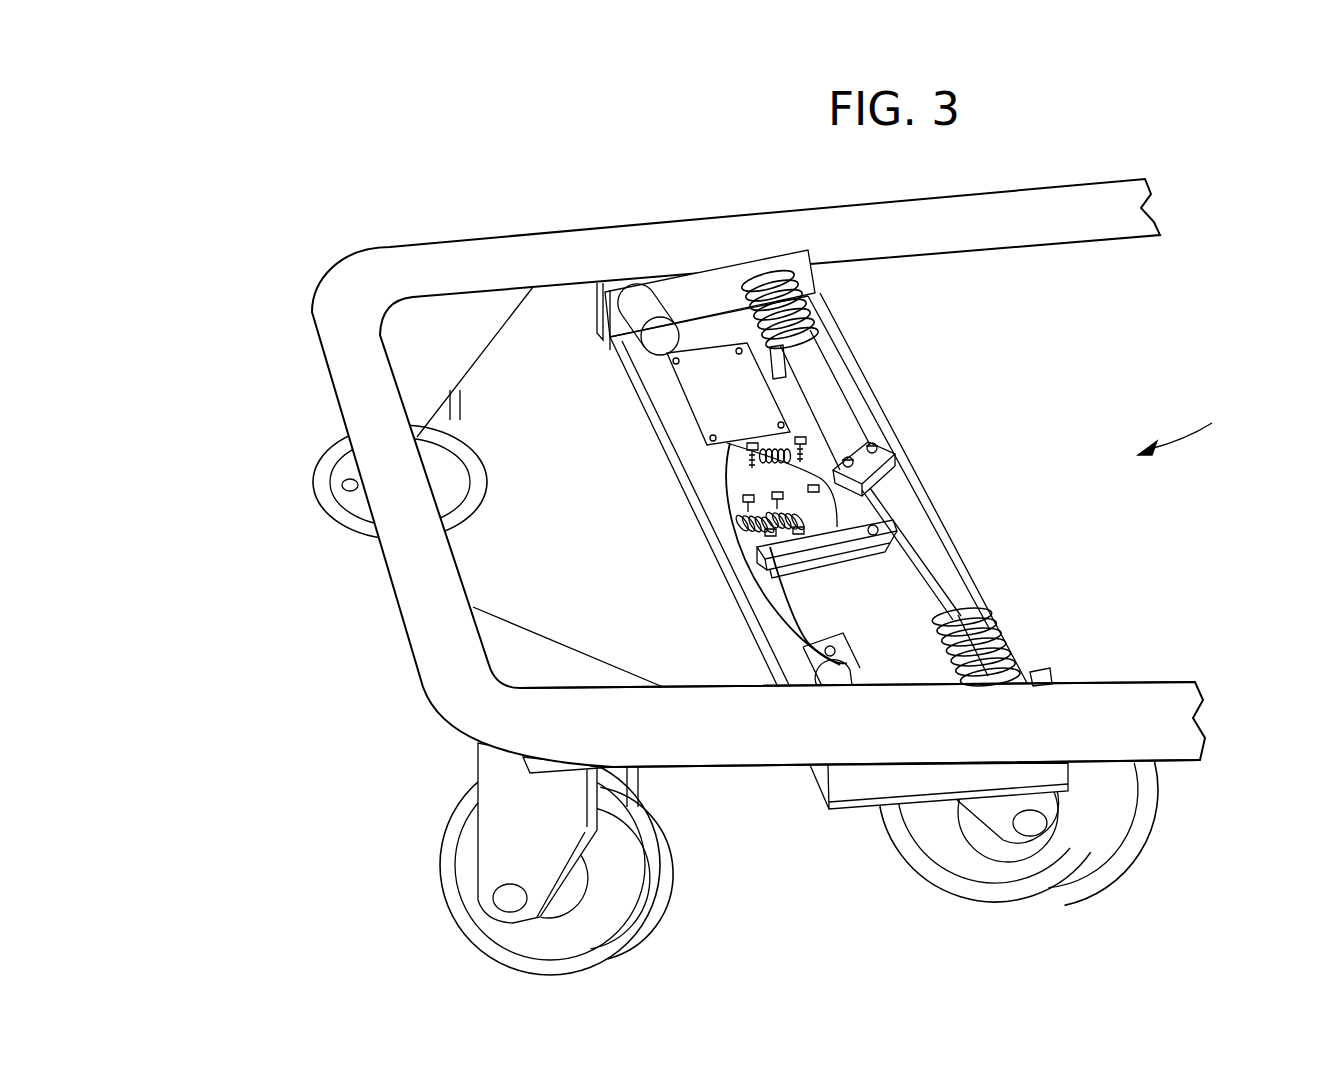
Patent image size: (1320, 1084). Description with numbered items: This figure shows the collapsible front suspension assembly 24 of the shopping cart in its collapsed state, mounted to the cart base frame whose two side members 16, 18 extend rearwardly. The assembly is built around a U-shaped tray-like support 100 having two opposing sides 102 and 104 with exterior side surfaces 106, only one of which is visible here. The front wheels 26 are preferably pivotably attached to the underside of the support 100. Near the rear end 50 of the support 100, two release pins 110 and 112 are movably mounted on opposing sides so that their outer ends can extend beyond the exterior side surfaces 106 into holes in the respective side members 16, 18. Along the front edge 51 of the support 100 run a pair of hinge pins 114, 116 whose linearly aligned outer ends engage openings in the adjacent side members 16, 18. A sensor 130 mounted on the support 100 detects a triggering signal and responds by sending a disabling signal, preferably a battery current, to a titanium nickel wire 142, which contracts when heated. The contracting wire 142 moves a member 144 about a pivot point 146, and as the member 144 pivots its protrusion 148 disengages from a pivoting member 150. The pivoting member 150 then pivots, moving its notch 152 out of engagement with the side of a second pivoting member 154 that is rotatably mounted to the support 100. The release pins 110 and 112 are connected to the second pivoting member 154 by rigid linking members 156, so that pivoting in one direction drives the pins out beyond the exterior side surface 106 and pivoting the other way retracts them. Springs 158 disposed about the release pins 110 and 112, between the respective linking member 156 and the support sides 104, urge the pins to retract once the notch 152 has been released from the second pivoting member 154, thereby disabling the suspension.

The side member 16 is at (398, 280).
The side member 18 is at (690, 747).
The collapsible front suspension assembly 24 is at (1190, 430).
The front wheels 26 is at (1140, 823).
The rear end 50 is at (860, 380).
The front edge 51 is at (707, 547).
The support 100 is at (703, 500).
The side 102 is at (1048, 677).
The side 104 is at (660, 277).
The exterior side surface 106 is at (853, 787).
The release pin 110 is at (990, 630).
The release pin 112 is at (803, 323).
The hinge pin 114 is at (817, 673).
The hinge pin 116 is at (657, 340).
The sensor 130 is at (697, 400).
The titanium nickel wire 142 is at (737, 567).
The member 144 is at (852, 540).
The pivot point 146 is at (870, 540).
The protrusion 148 is at (837, 533).
The pivoting member 150 is at (840, 453).
The notch 152 is at (727, 478).
The second pivoting member 154 is at (860, 483).
The linking member 156 is at (813, 373).
The spring 158 is at (797, 277).